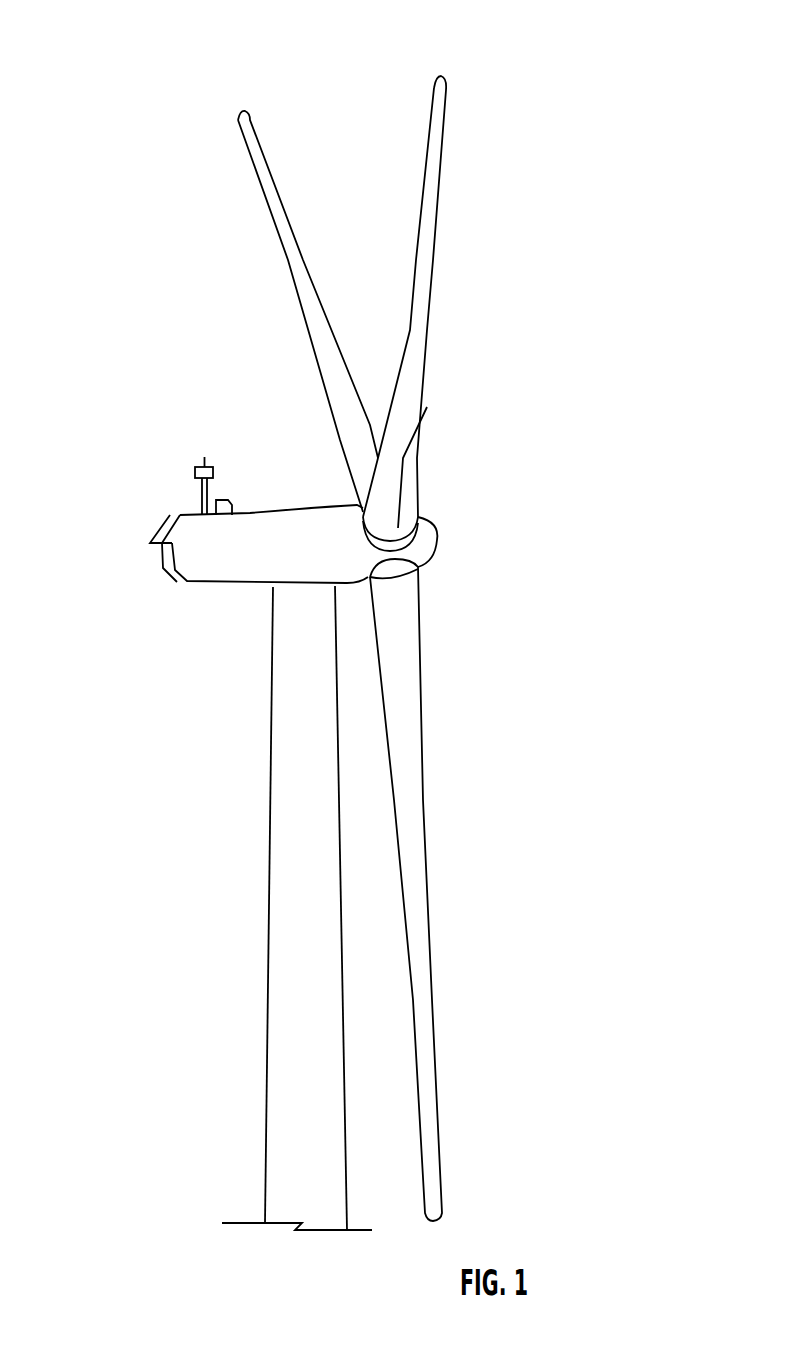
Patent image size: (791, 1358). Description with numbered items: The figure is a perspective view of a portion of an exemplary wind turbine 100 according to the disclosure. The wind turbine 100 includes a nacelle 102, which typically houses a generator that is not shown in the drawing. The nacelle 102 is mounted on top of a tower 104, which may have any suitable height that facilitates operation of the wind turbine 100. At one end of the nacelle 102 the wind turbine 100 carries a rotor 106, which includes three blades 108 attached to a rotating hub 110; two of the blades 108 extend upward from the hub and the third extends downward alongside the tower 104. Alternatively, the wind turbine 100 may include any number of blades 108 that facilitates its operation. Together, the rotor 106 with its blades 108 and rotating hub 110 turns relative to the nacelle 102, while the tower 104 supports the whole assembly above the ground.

The wind turbine 100 is at (140, 62).
The nacelle 102 is at (197, 612).
The tower 104 is at (270, 880).
The rotor 106 is at (580, 298).
The blades 108 is at (292, 223).
The rotating hub 110 is at (437, 540).